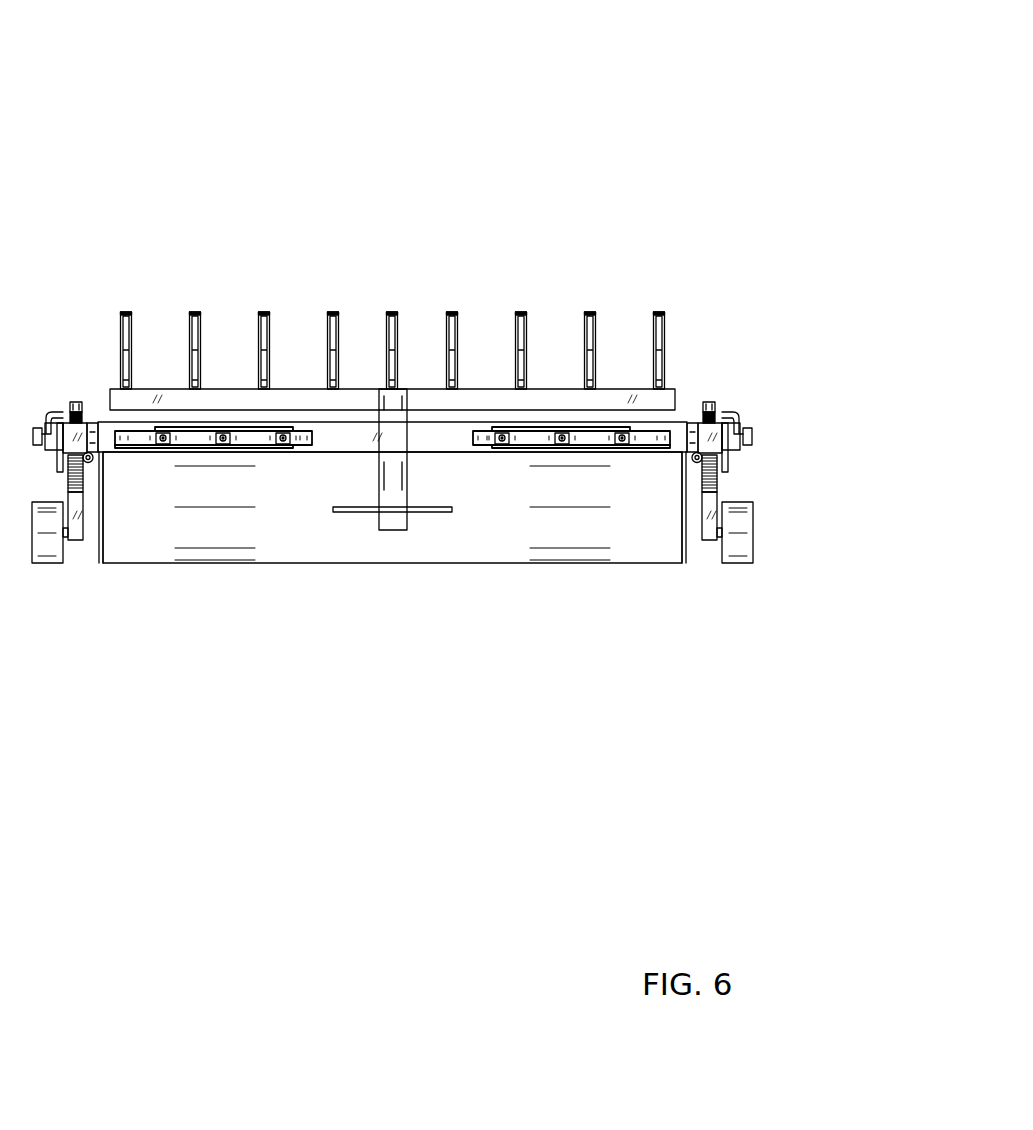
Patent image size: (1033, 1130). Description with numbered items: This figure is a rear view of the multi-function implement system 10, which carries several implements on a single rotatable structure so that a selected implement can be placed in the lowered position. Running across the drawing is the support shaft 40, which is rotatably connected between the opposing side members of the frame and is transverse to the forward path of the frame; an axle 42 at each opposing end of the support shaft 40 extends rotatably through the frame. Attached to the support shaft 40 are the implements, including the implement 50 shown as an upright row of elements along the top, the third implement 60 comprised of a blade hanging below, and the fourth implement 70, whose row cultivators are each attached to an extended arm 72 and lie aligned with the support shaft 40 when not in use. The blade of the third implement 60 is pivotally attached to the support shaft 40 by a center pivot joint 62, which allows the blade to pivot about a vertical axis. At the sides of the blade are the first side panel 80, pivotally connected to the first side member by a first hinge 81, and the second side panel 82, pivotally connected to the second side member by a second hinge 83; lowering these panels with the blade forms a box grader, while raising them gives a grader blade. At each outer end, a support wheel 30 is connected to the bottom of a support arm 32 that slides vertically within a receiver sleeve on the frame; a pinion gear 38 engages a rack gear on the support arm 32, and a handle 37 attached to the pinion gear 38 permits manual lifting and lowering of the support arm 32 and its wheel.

The multi-function implement system 10 is at (637, 117).
The support wheels 30 is at (40, 565).
The support arm 32 is at (77, 541).
The handle 37 is at (37, 423).
The pinion gear 38 is at (77, 402).
The support shaft 40 is at (450, 436).
The axle 42 is at (91, 423).
The implement 50 is at (394, 302).
The third implement 60 is at (282, 576).
The center pivot joint 62 is at (393, 532).
The fourth implement 70 is at (140, 458).
The extended arm 72 is at (295, 448).
The first side panel 80 is at (103, 547).
The first hinge 81 is at (94, 463).
The second side panel 82 is at (680, 523).
The second hinge 83 is at (703, 541).